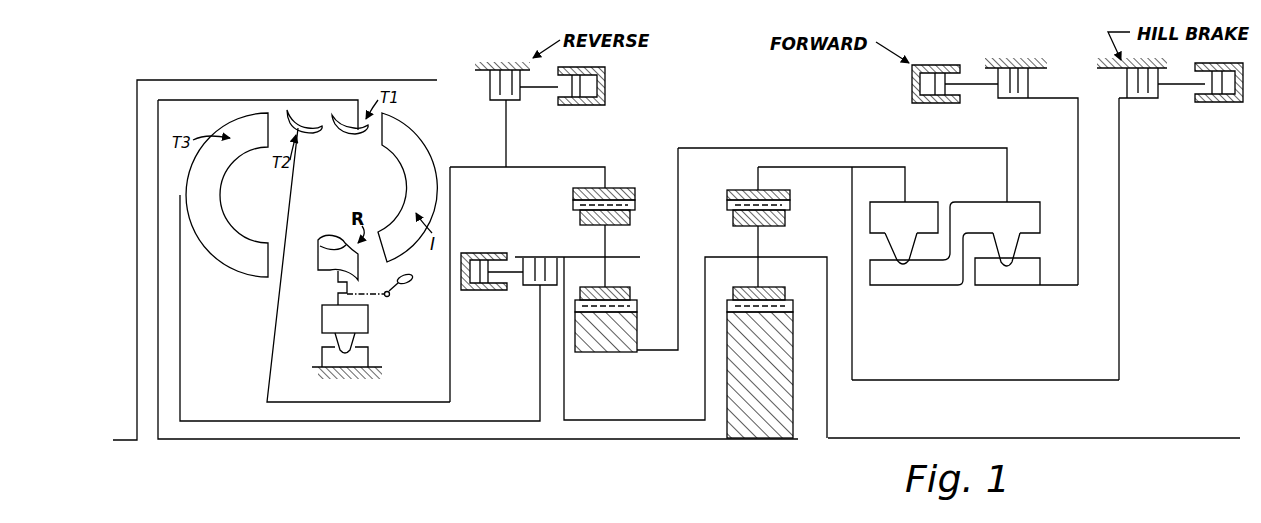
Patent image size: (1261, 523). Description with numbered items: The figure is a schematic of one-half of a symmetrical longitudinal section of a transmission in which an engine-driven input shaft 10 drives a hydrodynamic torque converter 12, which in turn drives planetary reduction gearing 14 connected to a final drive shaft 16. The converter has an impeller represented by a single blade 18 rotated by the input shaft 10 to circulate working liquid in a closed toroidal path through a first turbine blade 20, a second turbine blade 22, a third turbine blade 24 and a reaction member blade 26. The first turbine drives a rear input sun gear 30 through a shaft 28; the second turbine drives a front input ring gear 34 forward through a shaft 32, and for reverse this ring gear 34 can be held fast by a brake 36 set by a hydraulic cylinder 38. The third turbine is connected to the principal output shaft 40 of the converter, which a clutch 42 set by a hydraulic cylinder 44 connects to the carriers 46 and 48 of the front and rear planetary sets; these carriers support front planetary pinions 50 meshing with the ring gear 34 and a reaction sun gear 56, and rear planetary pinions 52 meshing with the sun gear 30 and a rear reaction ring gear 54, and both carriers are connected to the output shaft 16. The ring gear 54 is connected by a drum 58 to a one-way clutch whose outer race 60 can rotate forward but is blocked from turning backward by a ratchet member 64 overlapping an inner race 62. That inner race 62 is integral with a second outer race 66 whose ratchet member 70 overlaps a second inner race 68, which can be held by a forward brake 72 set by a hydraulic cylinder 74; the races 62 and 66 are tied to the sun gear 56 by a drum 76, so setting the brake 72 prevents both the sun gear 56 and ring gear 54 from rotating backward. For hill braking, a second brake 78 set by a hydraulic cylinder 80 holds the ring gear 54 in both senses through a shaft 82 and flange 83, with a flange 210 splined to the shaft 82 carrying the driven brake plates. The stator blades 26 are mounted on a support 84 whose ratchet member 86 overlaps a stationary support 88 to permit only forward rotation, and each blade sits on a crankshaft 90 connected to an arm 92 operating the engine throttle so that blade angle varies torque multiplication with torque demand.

The input shaft 10 is at (113, 440).
The hydrodynamic torque converter 12 is at (347, 78).
The planetary reduction gearing 14 is at (724, 120).
The final drive shaft 16 is at (1112, 438).
The impeller blade 18 is at (413, 163).
The first turbine blade 20 is at (353, 134).
The second turbine blade 22 is at (306, 136).
The third turbine blade 24 is at (212, 214).
The reaction member blade 26 is at (328, 252).
The shaft 28 is at (665, 439).
The rear input sun gear 30 is at (775, 420).
The shaft 32 is at (311, 401).
The front input ring gear 34 is at (635, 190).
The brake 36 is at (500, 100).
The hydraulic cylinder 38 is at (590, 82).
The principal output shaft 40 is at (468, 421).
The clutch 42 is at (545, 240).
The hydraulic cylinder 44 is at (470, 258).
The front carrier 46 is at (620, 257).
The rear carrier 48 is at (793, 257).
The front planetary pinions 50 is at (630, 218).
The rear planetary pinions 52 is at (785, 218).
The rear reaction ring gear 54 is at (790, 192).
The reaction sun gear 56 is at (625, 330).
The drum 58 is at (893, 167).
The outer race 60 is at (913, 208).
The inner race 62 is at (922, 275).
The ratchet member 64 is at (905, 240).
The second outer race 66 is at (1013, 220).
The second inner race 68 is at (1023, 273).
The ratchet member 70 is at (1007, 247).
The brake 72 is at (1028, 84).
The hydraulic cylinder 74 is at (938, 72).
The drum 76 is at (800, 148).
The second brake 78 is at (1135, 98).
The hydraulic cylinder 80 is at (1222, 88).
The shaft 82 is at (993, 380).
The flange 83 is at (852, 315).
The support 84 is at (325, 318).
The ratchet member 86 is at (352, 345).
The stationary support 88 is at (368, 358).
The crankshaft 90 is at (338, 283).
The arm 92 is at (410, 285).
The flange 210 is at (1119, 237).